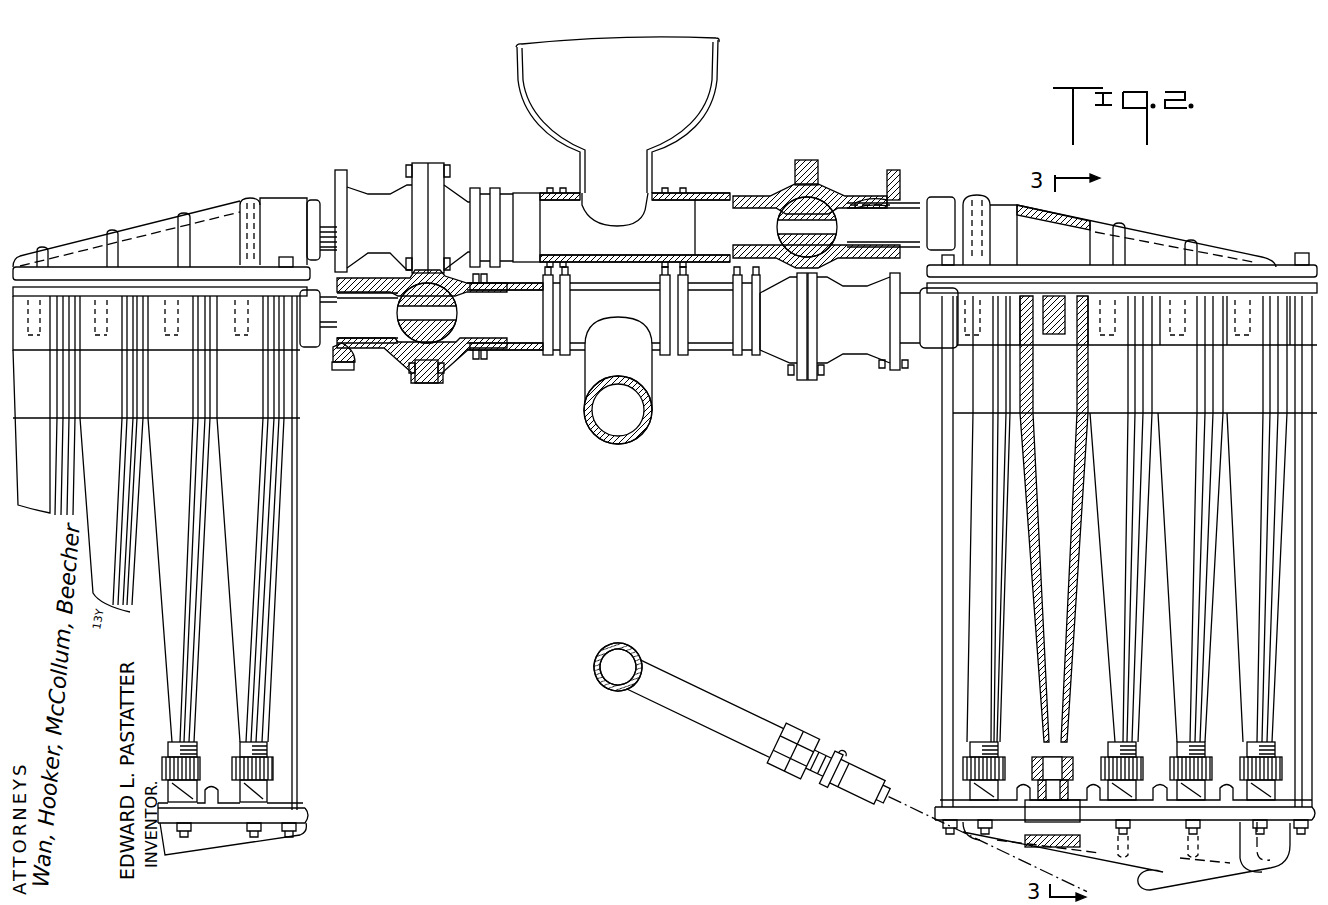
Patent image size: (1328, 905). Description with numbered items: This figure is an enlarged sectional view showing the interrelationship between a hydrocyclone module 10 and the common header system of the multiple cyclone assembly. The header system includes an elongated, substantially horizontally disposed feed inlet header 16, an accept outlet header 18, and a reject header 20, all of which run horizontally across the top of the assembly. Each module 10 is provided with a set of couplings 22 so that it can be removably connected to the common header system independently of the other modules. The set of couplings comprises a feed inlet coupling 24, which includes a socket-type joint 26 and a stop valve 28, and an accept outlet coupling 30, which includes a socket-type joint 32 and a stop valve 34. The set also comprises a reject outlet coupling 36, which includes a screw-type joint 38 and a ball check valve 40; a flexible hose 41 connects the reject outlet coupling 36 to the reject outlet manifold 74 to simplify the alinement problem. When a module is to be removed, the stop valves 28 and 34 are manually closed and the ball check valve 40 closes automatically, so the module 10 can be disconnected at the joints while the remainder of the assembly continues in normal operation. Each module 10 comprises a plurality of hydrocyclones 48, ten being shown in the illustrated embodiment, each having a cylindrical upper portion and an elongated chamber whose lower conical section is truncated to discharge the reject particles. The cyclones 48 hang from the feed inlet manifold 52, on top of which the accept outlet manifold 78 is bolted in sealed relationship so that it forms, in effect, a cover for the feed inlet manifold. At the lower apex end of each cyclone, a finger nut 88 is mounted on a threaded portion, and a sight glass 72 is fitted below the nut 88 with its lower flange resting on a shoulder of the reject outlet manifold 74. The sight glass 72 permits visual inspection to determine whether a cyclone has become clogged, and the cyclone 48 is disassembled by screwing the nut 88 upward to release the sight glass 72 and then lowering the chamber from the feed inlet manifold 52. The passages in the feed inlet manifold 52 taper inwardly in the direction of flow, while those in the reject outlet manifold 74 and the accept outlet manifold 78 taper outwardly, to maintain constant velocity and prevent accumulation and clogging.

The hydrocyclone module 10 is at (311, 584).
The feed inlet header 16 is at (652, 374).
The accept outlet header 18 is at (705, 77).
The reject header 20 is at (638, 656).
The set of couplings 22 is at (846, 179).
The feed inlet coupling 24 is at (342, 372).
The socket-type joint 26 is at (366, 350).
The stop valve 28 is at (440, 340).
The accept outlet coupling 30 is at (403, 185).
The socket-type joint 32 is at (880, 198).
The stop valve 34 is at (792, 212).
The reject outlet coupling 36 is at (822, 742).
The screw-type joint 38 is at (790, 773).
The ball check valve 40 is at (812, 783).
The flexible hose 41 is at (868, 782).
The hydrocyclone 48 is at (204, 688).
The feed inlet manifold 52 is at (110, 306).
The sight glass 72 is at (250, 783).
The reject outlet manifold 74 is at (190, 850).
The accept outlet manifold 78 is at (143, 232).
The finger nut 88 is at (198, 757).